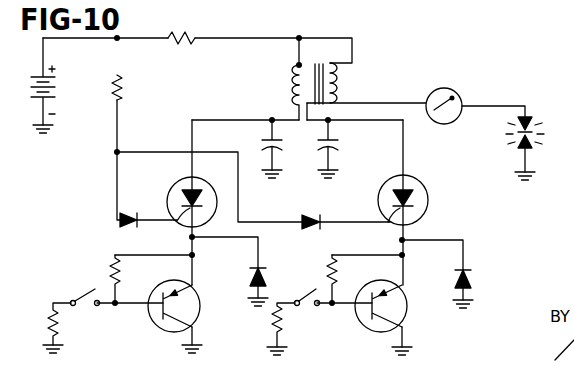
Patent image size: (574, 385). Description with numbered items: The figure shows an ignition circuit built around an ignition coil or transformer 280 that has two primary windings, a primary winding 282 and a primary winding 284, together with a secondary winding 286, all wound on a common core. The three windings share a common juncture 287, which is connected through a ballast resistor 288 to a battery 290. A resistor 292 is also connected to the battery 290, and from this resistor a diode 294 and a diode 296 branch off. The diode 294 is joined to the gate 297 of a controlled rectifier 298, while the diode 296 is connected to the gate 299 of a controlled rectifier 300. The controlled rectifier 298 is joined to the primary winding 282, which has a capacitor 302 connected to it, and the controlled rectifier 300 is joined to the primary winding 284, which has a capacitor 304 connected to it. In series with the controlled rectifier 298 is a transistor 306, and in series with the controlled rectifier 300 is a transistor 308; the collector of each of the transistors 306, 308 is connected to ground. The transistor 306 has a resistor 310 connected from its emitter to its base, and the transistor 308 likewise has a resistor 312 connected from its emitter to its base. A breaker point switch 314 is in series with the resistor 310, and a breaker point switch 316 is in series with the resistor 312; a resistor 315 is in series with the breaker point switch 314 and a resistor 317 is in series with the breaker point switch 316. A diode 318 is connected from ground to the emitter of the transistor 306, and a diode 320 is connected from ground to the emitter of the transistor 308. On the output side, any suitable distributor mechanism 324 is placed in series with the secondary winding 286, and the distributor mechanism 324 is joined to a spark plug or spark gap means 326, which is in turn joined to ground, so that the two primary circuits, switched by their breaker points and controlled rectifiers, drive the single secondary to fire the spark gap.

The ignition coil 280 is at (322, 62).
The primary winding 282 is at (288, 70).
The primary winding 284 is at (288, 93).
The secondary winding 286 is at (334, 90).
The common juncture 287 is at (298, 62).
The ballast resistor 288 is at (185, 43).
The battery 290 is at (76, 98).
The resistor 292 is at (124, 86).
The diode 294 is at (118, 221).
The diode 296 is at (302, 217).
The gate 297 is at (183, 224).
The controlled rectifier 298 is at (174, 184).
The gate 299 is at (396, 220).
The controlled rectifier 300 is at (421, 182).
The capacitor 302 is at (262, 142).
The capacitor 304 is at (336, 143).
The transistor 306 is at (158, 320).
The transistor 308 is at (404, 318).
The resistor 310 is at (121, 268).
The resistor 312 is at (337, 270).
The breaker point switch 314 is at (93, 290).
The resistor 315 is at (52, 312).
The breaker point switch 316 is at (307, 290).
The resistor 317 is at (272, 325).
The diode 318 is at (250, 278).
The diode 320 is at (455, 282).
The distributor mechanism 324 is at (454, 96).
The spark gap means 326 is at (538, 117).